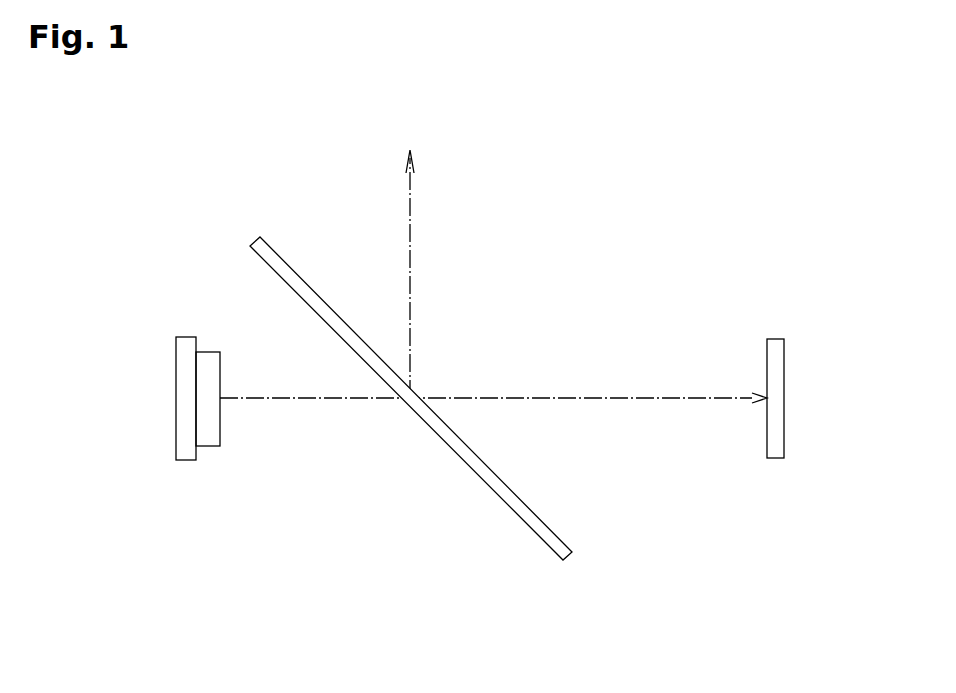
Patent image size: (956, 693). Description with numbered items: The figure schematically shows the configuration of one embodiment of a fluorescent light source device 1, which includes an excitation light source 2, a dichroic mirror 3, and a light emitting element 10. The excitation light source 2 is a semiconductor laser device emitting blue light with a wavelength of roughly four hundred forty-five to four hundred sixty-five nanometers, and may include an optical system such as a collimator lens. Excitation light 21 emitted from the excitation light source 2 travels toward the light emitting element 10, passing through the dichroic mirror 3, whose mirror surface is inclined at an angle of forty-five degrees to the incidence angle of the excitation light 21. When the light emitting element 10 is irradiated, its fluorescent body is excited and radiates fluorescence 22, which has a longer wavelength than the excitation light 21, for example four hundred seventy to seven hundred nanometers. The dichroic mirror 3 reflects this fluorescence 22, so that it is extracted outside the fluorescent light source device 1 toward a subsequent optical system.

The fluorescent light source device 1 is at (836, 585).
The excitation light source 2 is at (212, 438).
The dichroic mirror 3 is at (507, 493).
The light emitting element 10 is at (777, 348).
The excitation light 21 is at (335, 399).
The fluorescence 22 is at (410, 220).